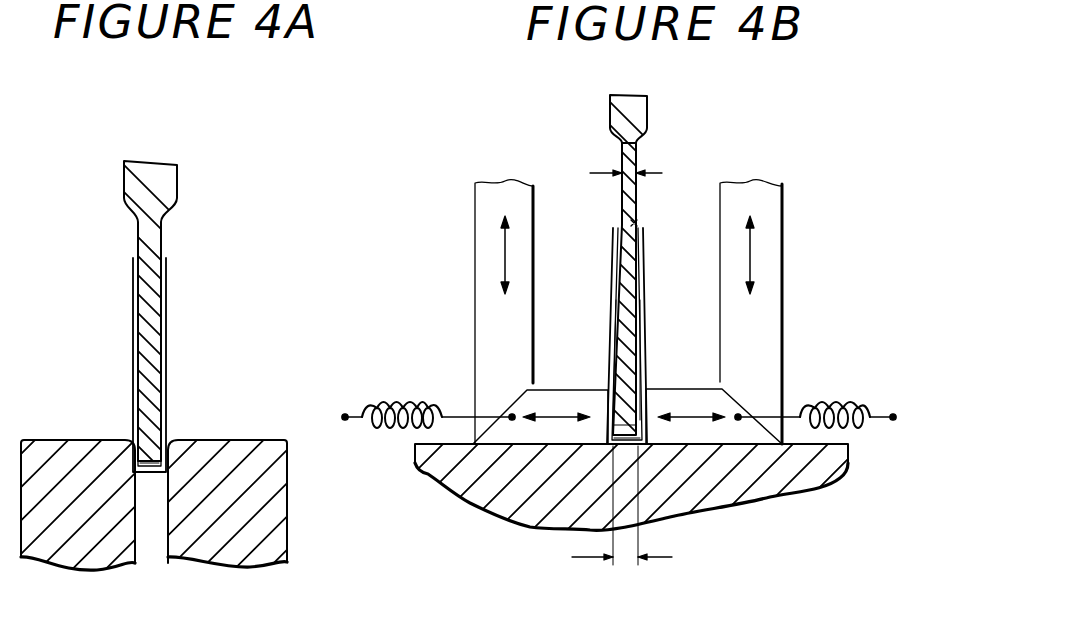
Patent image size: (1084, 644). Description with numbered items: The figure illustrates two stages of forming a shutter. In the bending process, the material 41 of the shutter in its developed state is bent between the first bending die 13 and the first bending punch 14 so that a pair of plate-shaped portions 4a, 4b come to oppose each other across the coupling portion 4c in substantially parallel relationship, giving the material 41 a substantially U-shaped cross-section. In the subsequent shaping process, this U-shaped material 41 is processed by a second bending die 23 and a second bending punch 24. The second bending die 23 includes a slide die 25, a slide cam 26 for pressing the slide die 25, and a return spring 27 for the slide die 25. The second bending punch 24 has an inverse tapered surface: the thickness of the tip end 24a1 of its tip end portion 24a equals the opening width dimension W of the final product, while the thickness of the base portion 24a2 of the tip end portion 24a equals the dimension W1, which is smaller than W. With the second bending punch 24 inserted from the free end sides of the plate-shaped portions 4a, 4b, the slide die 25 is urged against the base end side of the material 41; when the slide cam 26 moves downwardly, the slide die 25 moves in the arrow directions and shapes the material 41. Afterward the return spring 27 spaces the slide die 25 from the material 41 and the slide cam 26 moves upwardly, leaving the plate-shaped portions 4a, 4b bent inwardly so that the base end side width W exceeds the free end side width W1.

In FIG. 4A, the first bending punch 14 is at (157, 180).
In FIG. 4A, the material 41 is at (167, 272).
In FIG. 4B, the material 41 is at (613, 228).
In FIG. 4A, the plate-shaped portion 4a is at (167, 316).
In FIG. 4B, the plate-shaped portion 4a is at (646, 260).
In FIG. 4A, the plate-shaped portion 4b is at (133, 316).
In FIG. 4B, the plate-shaped portion 4b is at (615, 257).
In FIG. 4A, the coupling portion 4c is at (152, 460).
In FIG. 4B, the coupling portion 4c is at (620, 447).
In FIG. 4A, the first bending die 13 is at (238, 457).
In FIG. 4B, the second bending punch 24 is at (589, 293).
In FIG. 4B, the tip end portion 24a is at (628, 299).
In FIG. 4B, the tip end 24a1 is at (613, 422).
In FIG. 4B, the base portion 24a2 is at (634, 223).
In FIG. 4B, the slide cam 26 is at (488, 247).
In FIG. 4B, the slide die 25 is at (571, 405).
In FIG. 4B, the return spring 27 is at (402, 405).
In FIG. 4B, the second bending die 23 is at (753, 478).
In FIG. 4B, the opening width dimension W is at (622, 558).
In FIG. 4B, the dimension W1 is at (641, 169).